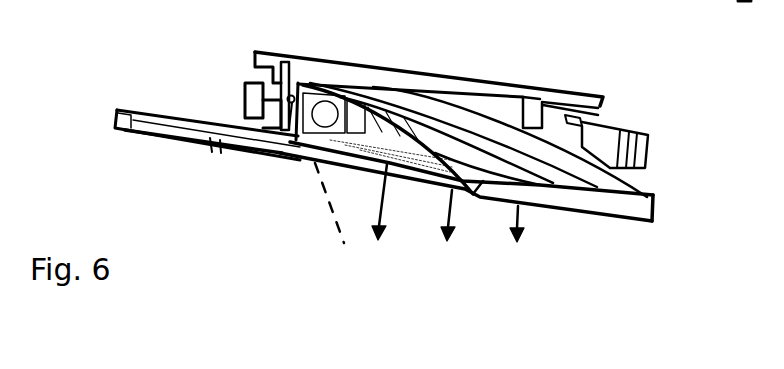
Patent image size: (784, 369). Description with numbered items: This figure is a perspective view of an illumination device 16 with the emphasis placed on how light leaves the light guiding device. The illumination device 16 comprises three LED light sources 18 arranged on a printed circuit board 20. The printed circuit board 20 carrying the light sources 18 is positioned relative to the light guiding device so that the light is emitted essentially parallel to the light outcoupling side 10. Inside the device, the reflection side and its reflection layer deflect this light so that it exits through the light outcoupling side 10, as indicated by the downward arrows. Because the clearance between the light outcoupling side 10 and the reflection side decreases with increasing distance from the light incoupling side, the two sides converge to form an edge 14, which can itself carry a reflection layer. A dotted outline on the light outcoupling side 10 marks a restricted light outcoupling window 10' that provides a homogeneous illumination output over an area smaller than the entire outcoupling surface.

The light outcoupling side 10 is at (471, 190).
The restricted light outcoupling window 10' is at (340, 221).
The edge 14 is at (635, 207).
The illumination device 16 is at (268, 186).
The light sources 18 is at (247, 97).
The printed circuit board 20 is at (433, 78).